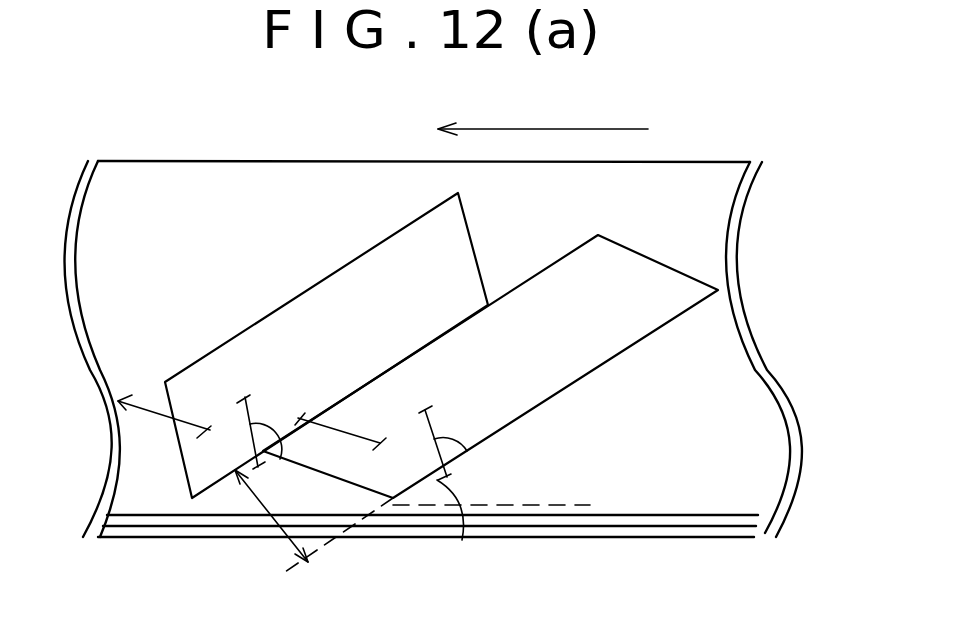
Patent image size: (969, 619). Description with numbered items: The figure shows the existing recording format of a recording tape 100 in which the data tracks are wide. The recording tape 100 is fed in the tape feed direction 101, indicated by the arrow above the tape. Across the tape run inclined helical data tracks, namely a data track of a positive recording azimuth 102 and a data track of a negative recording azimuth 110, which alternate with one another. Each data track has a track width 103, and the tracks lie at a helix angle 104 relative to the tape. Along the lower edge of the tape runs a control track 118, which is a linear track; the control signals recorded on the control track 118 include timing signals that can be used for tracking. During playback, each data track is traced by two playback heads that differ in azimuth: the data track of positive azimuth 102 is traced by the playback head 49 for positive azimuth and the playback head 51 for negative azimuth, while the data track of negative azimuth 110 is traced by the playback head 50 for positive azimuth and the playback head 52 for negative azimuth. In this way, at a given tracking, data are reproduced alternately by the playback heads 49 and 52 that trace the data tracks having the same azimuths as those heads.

The recording tape 100 is at (195, 159).
The tape feed direction 101 is at (517, 128).
The data track of a positive recording azimuth 102 is at (267, 313).
The data track of a negative recording azimuth 110 is at (575, 383).
The control track 118 is at (677, 519).
The playback head for positive azimuth 49 is at (150, 415).
The playback head for positive azimuth 50 is at (352, 440).
The playback head for negative azimuth 51 is at (268, 449).
The playback head for negative azimuth 52 is at (467, 451).
The track width 103 is at (264, 507).
The helix angle 104 is at (462, 540).